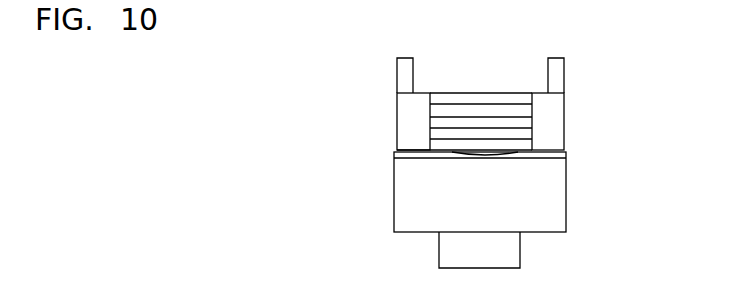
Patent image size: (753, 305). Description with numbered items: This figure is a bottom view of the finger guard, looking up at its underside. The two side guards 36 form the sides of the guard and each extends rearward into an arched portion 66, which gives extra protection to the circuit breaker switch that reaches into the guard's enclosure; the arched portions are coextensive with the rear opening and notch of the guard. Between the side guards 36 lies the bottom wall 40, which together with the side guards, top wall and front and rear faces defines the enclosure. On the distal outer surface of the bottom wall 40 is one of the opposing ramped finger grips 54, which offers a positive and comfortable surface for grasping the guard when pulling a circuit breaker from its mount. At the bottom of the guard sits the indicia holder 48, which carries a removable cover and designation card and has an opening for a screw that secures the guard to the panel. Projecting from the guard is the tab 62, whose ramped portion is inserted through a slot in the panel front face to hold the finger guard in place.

The arched portion 66 is at (405, 72).
The side guards 36 is at (397, 112).
The bottom wall 40 is at (407, 133).
The ramped finger grips 54 is at (492, 110).
The indicia holder 48 is at (458, 213).
The tab 62 is at (490, 252).